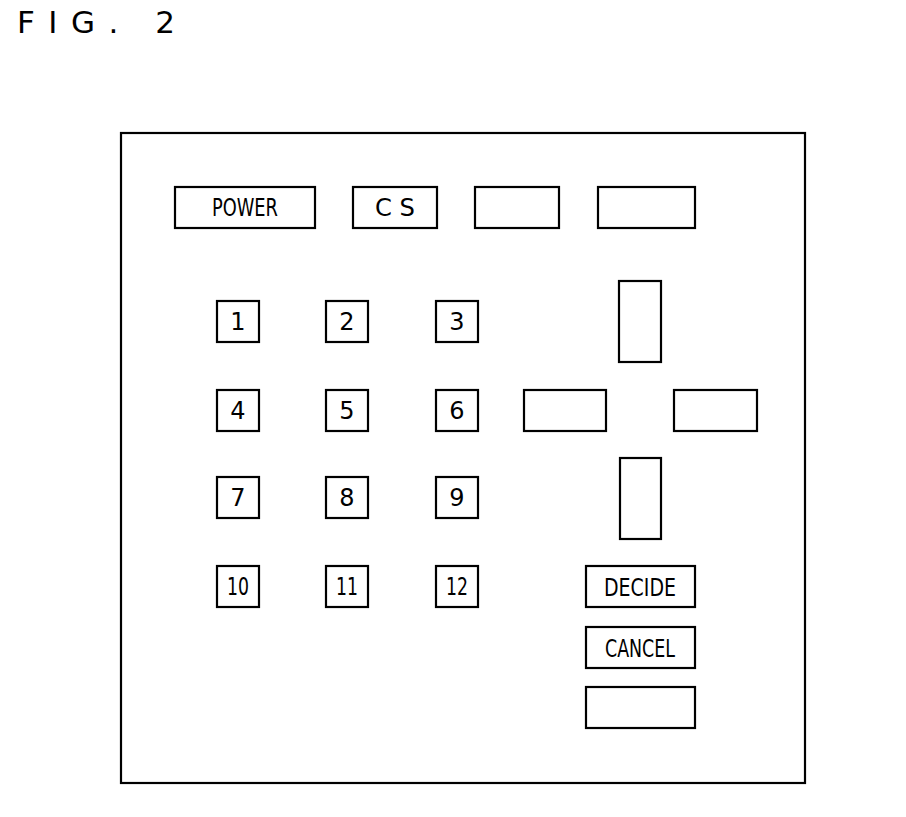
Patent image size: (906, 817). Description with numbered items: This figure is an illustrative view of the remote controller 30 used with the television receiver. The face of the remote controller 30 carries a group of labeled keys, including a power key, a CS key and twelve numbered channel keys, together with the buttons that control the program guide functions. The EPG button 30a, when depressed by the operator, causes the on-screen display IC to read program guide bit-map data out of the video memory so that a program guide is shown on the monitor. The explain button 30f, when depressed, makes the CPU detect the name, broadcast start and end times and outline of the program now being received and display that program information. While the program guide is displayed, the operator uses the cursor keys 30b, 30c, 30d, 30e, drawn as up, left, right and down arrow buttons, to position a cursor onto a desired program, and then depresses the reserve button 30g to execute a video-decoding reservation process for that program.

The remote controller 30 is at (108, 116).
The EPG button 30a is at (521, 187).
The cursor key 30b is at (662, 302).
The cursor key 30c is at (557, 390).
The cursor key 30d is at (741, 390).
The cursor key 30e is at (662, 519).
The explain button 30f is at (646, 187).
The reserve button 30g is at (697, 706).